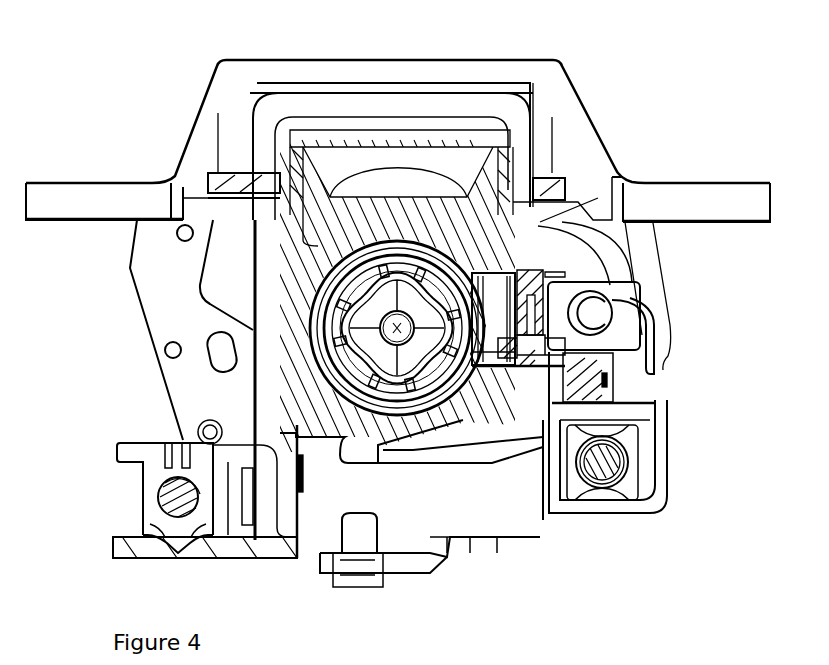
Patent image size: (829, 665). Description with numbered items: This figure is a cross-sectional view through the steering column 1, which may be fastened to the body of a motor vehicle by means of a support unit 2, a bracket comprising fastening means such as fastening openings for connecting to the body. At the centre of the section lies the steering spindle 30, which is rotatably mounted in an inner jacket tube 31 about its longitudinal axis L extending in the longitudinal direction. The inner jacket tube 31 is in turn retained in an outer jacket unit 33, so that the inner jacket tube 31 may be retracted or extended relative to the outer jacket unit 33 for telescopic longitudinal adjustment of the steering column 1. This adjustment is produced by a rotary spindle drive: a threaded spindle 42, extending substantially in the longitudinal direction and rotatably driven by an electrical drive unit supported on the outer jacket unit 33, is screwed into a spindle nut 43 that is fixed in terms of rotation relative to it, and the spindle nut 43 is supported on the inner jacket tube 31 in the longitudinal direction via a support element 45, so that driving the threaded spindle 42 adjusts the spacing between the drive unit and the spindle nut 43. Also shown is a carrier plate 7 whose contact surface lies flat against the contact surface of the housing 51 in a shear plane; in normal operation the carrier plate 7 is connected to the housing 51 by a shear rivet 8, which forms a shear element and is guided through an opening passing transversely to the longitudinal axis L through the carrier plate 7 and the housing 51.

The steering column 1 is at (134, 106).
The support unit 2 is at (573, 132).
The carrier plate 7 is at (573, 215).
The shear rivet 8 is at (545, 347).
The steering spindle 30 is at (365, 368).
The inner jacket tube 31 is at (332, 330).
The outer jacket unit 33 is at (318, 256).
The threaded spindle 42 is at (603, 466).
The spindle nut 43 is at (578, 490).
The support element 45 is at (620, 510).
The housing 51 is at (510, 235).
The longitudinal axis L is at (399, 340).